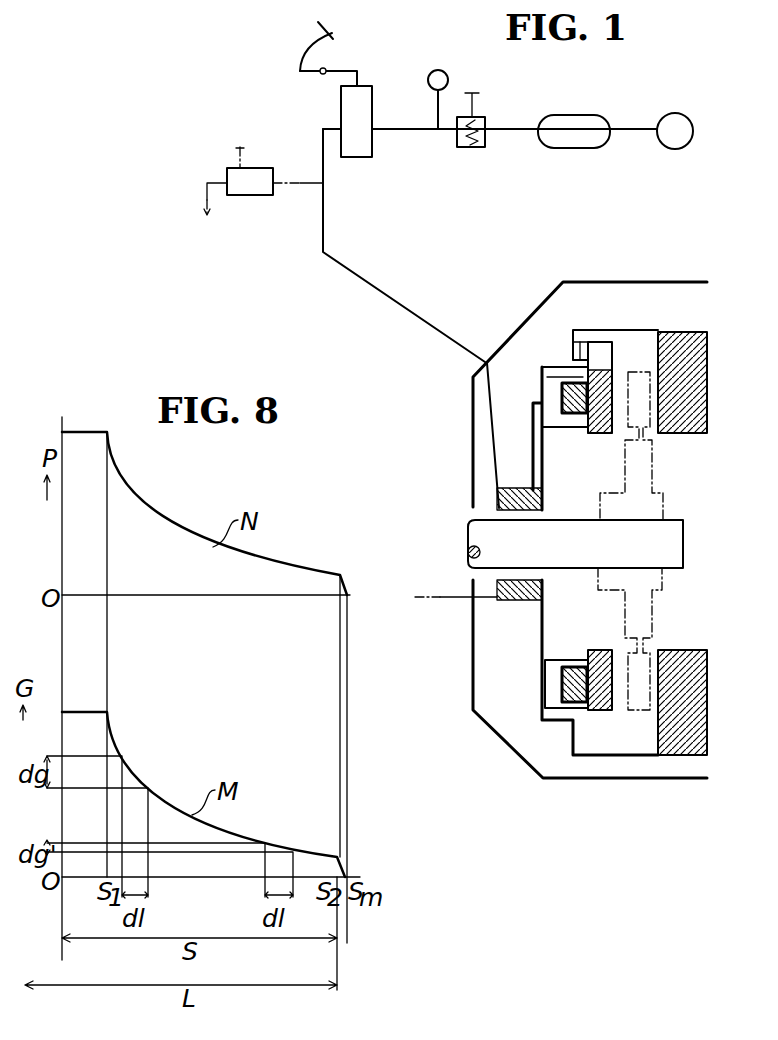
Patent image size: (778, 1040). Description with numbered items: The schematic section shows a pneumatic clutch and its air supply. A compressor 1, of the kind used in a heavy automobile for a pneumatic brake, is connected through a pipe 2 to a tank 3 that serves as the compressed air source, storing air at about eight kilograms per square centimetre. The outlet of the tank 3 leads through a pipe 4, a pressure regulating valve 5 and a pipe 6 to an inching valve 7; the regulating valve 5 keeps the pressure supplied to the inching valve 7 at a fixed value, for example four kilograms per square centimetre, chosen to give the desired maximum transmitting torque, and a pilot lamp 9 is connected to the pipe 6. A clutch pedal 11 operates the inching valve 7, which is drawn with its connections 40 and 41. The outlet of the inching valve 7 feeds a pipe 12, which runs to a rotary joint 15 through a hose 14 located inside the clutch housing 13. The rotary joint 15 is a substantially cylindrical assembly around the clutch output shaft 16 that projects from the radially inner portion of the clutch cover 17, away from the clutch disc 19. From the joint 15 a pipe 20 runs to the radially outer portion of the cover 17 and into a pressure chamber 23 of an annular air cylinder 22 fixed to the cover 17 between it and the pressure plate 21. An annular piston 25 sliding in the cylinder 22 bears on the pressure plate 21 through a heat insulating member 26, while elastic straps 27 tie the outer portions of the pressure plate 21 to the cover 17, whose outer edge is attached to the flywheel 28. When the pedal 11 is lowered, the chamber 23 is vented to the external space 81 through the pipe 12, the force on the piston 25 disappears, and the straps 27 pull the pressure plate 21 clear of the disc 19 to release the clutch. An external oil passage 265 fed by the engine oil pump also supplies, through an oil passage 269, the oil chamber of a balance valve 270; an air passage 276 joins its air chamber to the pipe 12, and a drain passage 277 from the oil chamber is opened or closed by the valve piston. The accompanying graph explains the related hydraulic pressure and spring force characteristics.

The compressor 1 is at (678, 146).
The pipe 2 is at (628, 132).
The tank 3 is at (577, 144).
The pipe 4 is at (520, 130).
The pressure regulating valve 5 is at (466, 147).
The pipe 6 is at (420, 130).
The inching valve 7 is at (352, 157).
The pilot lamp 9 is at (435, 72).
The clutch pedal 11 is at (332, 32).
The pipe 12 is at (415, 310).
The clutch housing 13 is at (540, 300).
The hose 14 is at (487, 405).
The rotary joint 15 is at (497, 500).
The clutch output shaft 16 is at (468, 552).
The clutch cover 17 is at (545, 468).
The clutch disc 19 is at (655, 492).
The pipe 20 is at (533, 452).
The pressure plate 21 is at (600, 378).
The annular air cylinder 22 is at (555, 660).
The pressure chamber 23 is at (556, 680).
The annular piston 25 is at (565, 690).
The heat insulating member 26 is at (585, 700).
The elastic straps 27 is at (578, 350).
The flywheel 28 is at (707, 388).
The outlet port 40 is at (380, 132).
The inlet port 41 is at (340, 128).
The external space 81 is at (390, 68).
The external oil passage 265 is at (442, 600).
The oil passage 269 is at (207, 185).
The balance valve 270 is at (240, 195).
The air passage 276 is at (302, 180).
The drain passage 277 is at (240, 166).